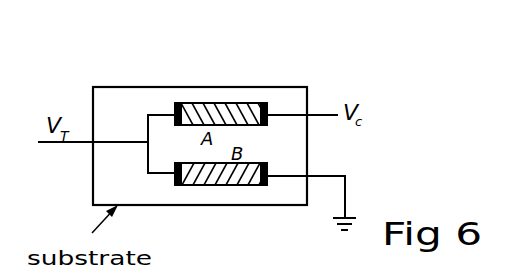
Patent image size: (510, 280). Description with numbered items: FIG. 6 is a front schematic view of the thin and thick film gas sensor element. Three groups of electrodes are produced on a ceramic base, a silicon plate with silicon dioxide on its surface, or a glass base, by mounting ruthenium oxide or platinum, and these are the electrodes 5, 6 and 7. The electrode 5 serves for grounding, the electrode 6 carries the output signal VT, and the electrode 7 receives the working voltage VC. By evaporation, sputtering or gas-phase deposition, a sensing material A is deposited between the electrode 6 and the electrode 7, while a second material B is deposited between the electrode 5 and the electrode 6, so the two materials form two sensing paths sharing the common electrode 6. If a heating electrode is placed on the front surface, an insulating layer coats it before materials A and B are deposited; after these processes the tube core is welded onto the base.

The electrode 5 is at (302, 190).
The electrode 6 is at (165, 144).
The electrode 7 is at (299, 124).